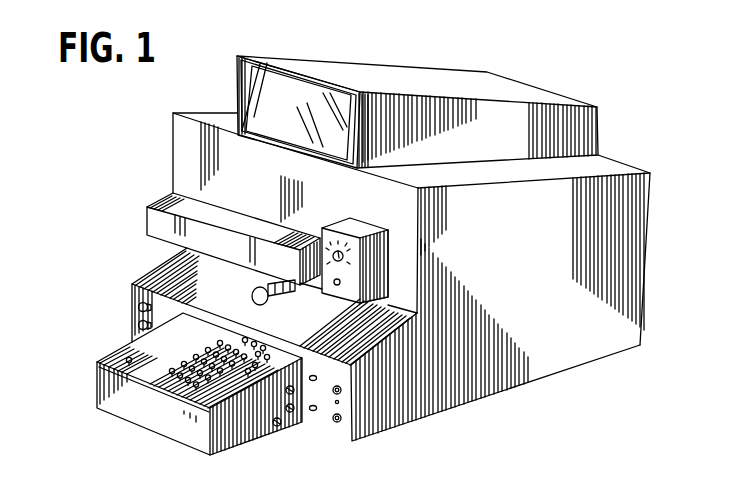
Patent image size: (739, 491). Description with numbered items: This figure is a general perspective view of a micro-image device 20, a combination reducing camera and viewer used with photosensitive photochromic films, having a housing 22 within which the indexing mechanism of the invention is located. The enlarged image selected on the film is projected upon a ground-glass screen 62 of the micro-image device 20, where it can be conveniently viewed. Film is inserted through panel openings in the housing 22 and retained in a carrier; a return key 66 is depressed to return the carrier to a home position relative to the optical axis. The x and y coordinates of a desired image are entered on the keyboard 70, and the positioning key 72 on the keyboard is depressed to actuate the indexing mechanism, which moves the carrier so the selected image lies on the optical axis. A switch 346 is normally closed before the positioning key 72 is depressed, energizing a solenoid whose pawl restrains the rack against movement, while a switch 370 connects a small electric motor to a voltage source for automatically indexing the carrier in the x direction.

The micro-image device 20 is at (382, 58).
The housing 22 is at (598, 172).
The ground-glass screen 62 is at (316, 89).
The return key 66 is at (248, 376).
The keyboard 70 is at (163, 401).
The positioning key 72 is at (266, 361).
The switch 346 is at (334, 395).
The switch 370 is at (128, 357).